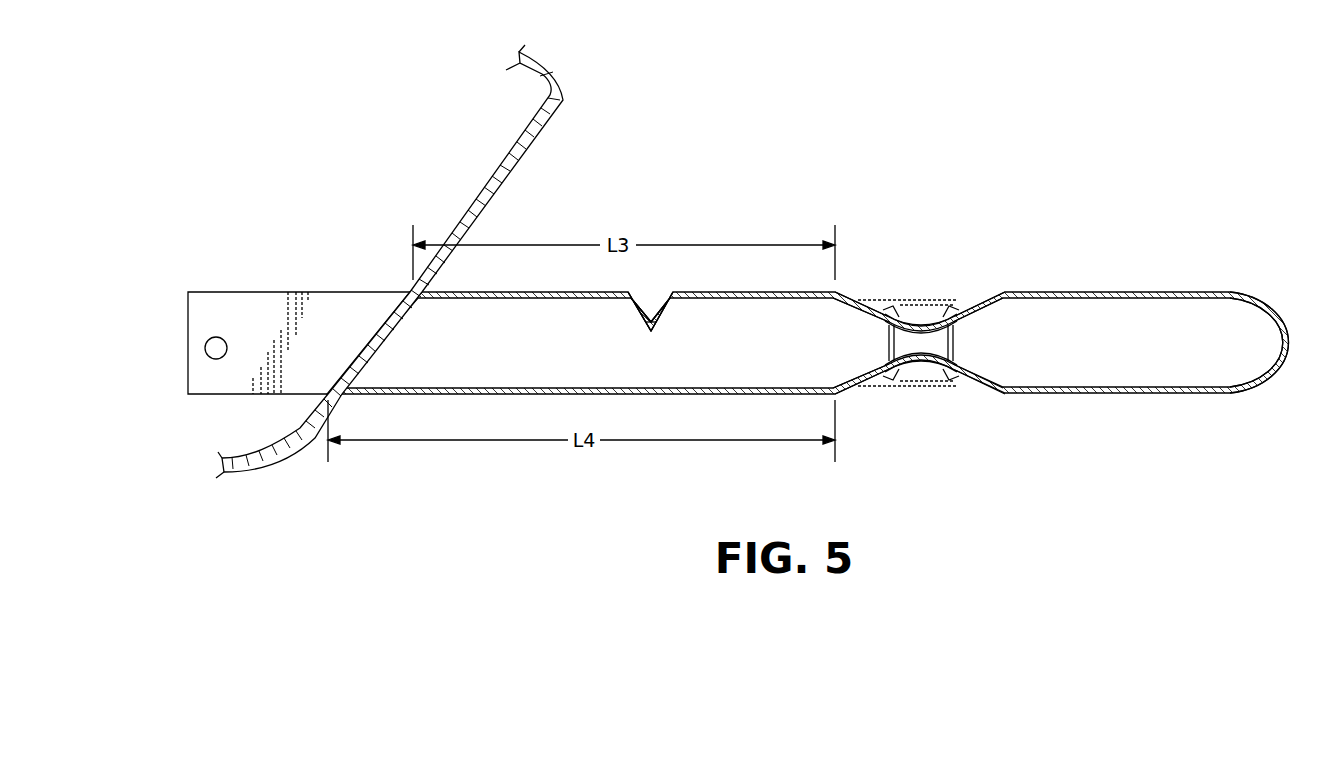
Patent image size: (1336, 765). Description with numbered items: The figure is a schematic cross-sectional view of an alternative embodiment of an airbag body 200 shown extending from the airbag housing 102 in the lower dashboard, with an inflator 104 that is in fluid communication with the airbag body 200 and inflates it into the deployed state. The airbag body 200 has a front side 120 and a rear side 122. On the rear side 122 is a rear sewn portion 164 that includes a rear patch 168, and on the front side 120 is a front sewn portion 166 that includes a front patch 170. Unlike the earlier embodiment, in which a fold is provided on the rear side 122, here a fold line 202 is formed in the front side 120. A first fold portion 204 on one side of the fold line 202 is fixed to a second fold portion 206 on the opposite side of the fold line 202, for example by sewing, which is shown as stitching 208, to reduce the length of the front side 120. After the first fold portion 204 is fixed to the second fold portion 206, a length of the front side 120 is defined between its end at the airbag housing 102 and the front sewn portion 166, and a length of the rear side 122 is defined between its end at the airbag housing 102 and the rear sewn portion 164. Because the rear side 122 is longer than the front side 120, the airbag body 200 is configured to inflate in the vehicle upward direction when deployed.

The airbag housing 102 is at (330, 292).
The inflator 104 is at (556, 133).
The front side 120 is at (1120, 278).
The rear side 122 is at (1140, 420).
The rear sewn portion 164 is at (914, 372).
The front sewn portion 166 is at (930, 312).
The rear patch 168 is at (935, 372).
The front patch 170 is at (908, 312).
The airbag body 200 is at (949, 371).
The fold line 202 is at (655, 336).
The first fold portion 204 is at (645, 316).
The second fold portion 206 is at (665, 314).
The stitching 208 is at (656, 318).